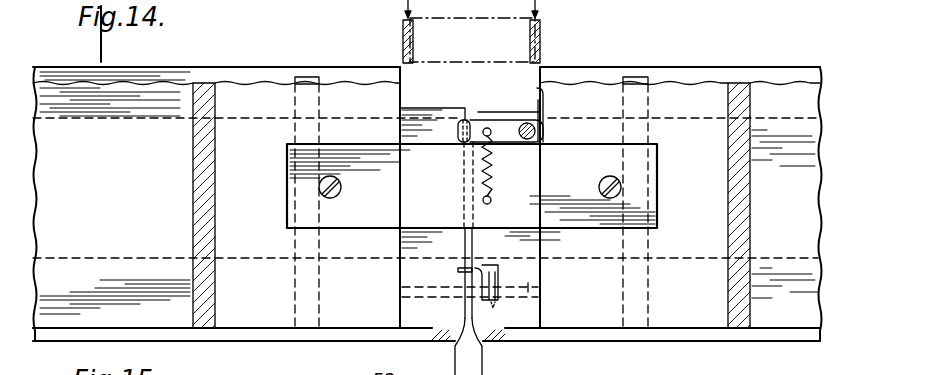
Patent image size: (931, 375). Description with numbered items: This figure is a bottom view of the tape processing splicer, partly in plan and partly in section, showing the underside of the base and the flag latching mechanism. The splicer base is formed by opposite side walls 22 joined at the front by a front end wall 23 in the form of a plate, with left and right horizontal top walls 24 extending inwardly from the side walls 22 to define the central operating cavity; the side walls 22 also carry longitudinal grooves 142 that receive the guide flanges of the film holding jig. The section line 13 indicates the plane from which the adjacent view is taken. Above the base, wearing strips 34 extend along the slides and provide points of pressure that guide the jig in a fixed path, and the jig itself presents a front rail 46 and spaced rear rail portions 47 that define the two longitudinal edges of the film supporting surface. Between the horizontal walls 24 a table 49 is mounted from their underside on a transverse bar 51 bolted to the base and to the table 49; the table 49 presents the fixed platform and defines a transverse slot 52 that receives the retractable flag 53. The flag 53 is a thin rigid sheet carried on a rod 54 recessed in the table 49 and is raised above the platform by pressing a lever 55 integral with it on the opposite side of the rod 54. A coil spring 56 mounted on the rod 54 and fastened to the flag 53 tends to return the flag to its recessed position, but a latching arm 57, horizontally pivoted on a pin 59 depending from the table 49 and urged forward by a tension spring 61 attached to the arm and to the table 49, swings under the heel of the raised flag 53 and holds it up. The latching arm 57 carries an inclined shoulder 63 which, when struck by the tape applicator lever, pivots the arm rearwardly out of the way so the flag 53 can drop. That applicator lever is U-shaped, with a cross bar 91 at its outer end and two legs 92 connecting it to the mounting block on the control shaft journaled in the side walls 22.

The section line 13- 13 is at (63, 50).
The side walls 22 is at (200, 85).
The front end wall 23 is at (685, 333).
The horizontal top walls 24 is at (261, 194).
The wearing strips 34 is at (305, 77).
The front rail 46 is at (100, 241).
The rear rail portions 47 is at (124, 124).
The table 49 is at (400, 274).
The transverse bar 51 is at (375, 209).
The transverse slot 52 is at (473, 109).
The retractable flag 53 is at (464, 243).
The rod 54 is at (532, 288).
The lever 55 is at (473, 363).
The coil spring 56 is at (482, 272).
The latching arm 57 is at (462, 130).
The pin 59 is at (533, 125).
The tension spring 61 is at (488, 160).
The inclined shoulder 63 is at (516, 120).
The cross bar 91 is at (478, 47).
The legs 92 is at (403, 25).
The longitudinal grooves 142 is at (198, 93).